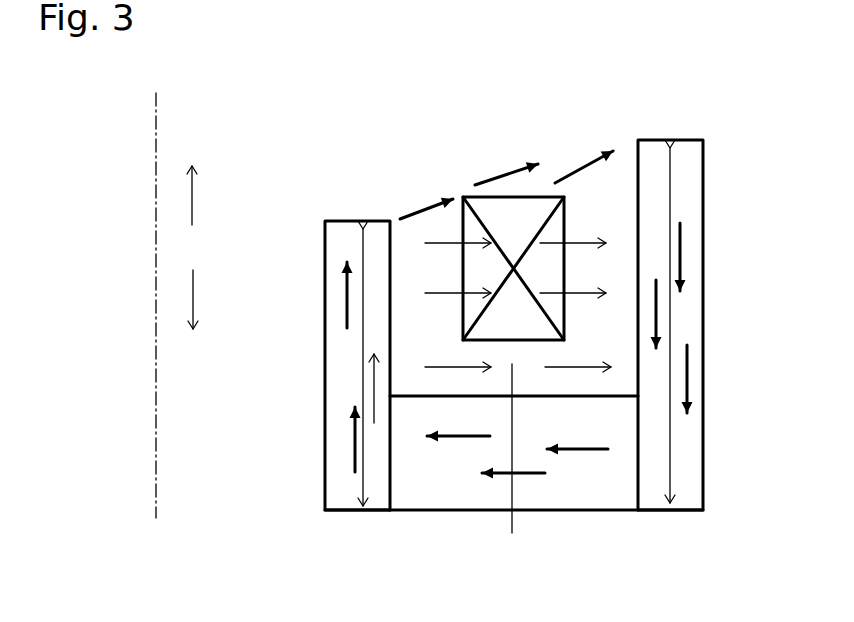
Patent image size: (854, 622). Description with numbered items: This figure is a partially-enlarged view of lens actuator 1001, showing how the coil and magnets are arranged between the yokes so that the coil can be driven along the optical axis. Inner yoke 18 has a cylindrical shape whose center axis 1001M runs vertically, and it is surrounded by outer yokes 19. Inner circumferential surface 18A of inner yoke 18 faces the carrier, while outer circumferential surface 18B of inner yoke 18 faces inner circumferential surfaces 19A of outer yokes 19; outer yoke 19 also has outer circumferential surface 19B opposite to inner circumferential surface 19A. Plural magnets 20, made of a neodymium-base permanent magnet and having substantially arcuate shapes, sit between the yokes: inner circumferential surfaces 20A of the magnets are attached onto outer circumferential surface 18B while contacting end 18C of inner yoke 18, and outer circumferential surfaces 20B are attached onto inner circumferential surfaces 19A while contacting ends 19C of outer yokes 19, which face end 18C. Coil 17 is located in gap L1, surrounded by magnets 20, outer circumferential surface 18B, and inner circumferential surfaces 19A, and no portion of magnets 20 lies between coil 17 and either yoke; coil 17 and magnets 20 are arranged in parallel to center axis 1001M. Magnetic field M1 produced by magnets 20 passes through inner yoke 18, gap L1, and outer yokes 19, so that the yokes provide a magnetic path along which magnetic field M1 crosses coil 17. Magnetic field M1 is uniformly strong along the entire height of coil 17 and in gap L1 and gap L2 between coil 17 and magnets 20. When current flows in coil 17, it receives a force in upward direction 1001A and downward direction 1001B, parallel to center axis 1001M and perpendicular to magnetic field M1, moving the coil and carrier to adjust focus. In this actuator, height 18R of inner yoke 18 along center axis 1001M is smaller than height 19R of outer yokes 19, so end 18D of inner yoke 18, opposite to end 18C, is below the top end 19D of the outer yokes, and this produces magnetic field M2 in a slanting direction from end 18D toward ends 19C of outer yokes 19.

The lens actuator 1001 is at (727, 137).
The center axis 1001M is at (156, 118).
The upward direction 1001A is at (193, 202).
The downward direction 1001B is at (195, 305).
The coil 17 is at (480, 208).
The magnetic field M1 is at (545, 240).
The magnetic field in slanting direction M2 is at (499, 172).
The inner yoke 18 is at (332, 491).
The inner circumferential surface of inner yoke 18A is at (323, 412).
The outer circumferential surface of inner yoke 18B is at (388, 462).
The end of inner yoke 18C is at (356, 510).
The end of inner yoke 18D is at (351, 227).
The height of inner yoke 18R is at (363, 343).
The outer yoke 19 is at (693, 478).
The inner circumferential surface of outer yoke 19A is at (638, 440).
The outer circumferential surface of outer yoke 19B is at (702, 342).
The end of outer yoke 19C is at (678, 500).
The second duct top portion 19D is at (661, 150).
The height of outer yoke 19R is at (672, 215).
The magnet 20 is at (549, 492).
The inner circumferential surface of magnet 20A is at (388, 469).
The outer circumferential surface of magnet 20B is at (640, 477).
The gap L1 is at (410, 345).
The gap L2 is at (511, 465).